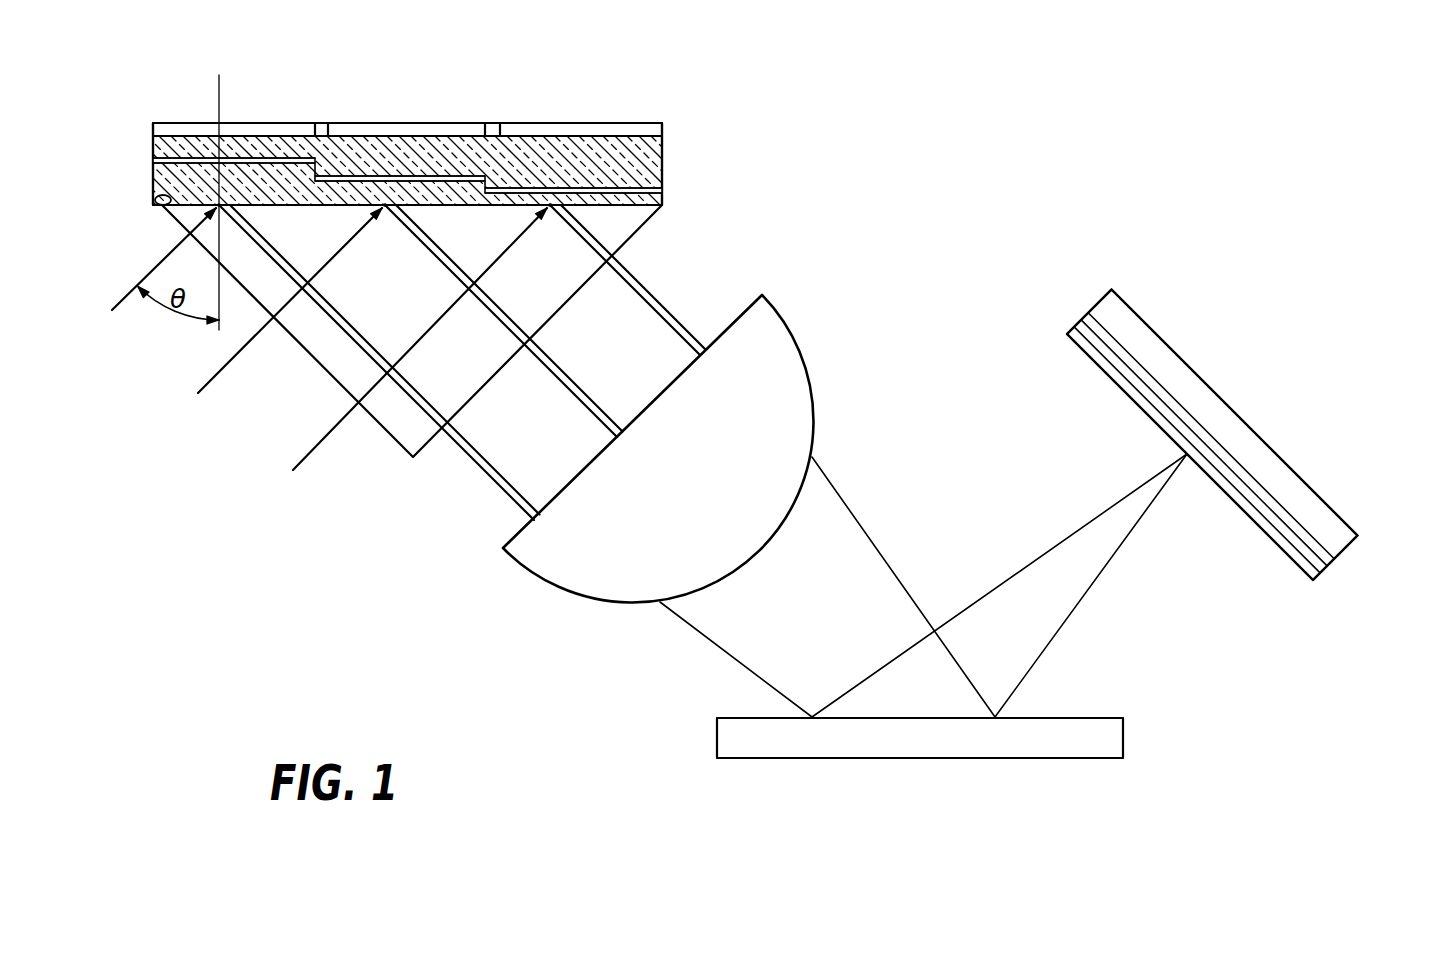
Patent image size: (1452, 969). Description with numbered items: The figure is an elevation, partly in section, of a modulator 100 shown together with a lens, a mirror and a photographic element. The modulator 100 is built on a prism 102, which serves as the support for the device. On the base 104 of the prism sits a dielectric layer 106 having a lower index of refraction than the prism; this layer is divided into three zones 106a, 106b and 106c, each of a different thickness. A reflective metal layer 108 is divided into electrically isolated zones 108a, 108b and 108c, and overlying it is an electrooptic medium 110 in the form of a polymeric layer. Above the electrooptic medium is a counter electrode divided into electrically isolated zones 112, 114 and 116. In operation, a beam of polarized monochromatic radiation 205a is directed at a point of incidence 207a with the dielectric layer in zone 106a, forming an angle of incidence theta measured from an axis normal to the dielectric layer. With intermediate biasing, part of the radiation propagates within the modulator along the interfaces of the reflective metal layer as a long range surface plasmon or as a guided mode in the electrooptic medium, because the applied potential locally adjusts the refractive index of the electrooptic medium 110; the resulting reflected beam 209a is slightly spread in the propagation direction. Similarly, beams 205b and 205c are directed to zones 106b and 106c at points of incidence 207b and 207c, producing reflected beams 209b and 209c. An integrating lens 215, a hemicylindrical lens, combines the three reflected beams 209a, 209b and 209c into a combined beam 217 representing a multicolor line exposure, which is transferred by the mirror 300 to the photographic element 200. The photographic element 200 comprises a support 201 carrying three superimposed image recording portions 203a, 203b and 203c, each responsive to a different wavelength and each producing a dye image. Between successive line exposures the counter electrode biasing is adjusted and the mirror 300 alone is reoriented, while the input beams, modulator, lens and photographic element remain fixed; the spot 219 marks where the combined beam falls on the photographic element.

The modulator 100 is at (606, 68).
The prism 102 is at (410, 458).
The base 104 is at (158, 204).
The dielectric layer 106 is at (153, 180).
The dielectric layer zone 106a is at (266, 196).
The dielectric layer zone 106b is at (433, 197).
The dielectric layer zone 106c is at (663, 191).
The reflective metal layer 108 is at (153, 160).
The reflective metal layer zone 108a is at (190, 157).
The reflective metal layer zone 108b is at (393, 175).
The reflective metal layer zone 108c is at (548, 187).
The electrooptic medium 110 is at (663, 150).
The counter electrode zone 112 is at (297, 88).
The counter electrode zone 114 is at (455, 88).
The counter electrode zone 116 is at (605, 122).
The photographic element 200 is at (1311, 441).
The support 201 is at (1356, 543).
The image recording portion 203a is at (1334, 560).
The image recording portion 203b is at (1083, 323).
The image recording portion 203c is at (1287, 545).
The beam of polarized monochromatic electromagnetic radiation 205a is at (118, 315).
The polarized monochromatic beam 205b is at (220, 383).
The polarized monochromatic beam 205c is at (312, 468).
The point of incidence 207a is at (213, 212).
The point of incidence 207b is at (388, 218).
The point of incidence 207c is at (555, 218).
The reflected beam 209a is at (343, 306).
The reflected beam 209b is at (491, 316).
The reflected beam 209c is at (643, 293).
The integrating lens 215 is at (804, 352).
The combined beam 217 is at (872, 532).
The reflected beam spot 219 is at (1186, 462).
The mirror 300 is at (717, 724).